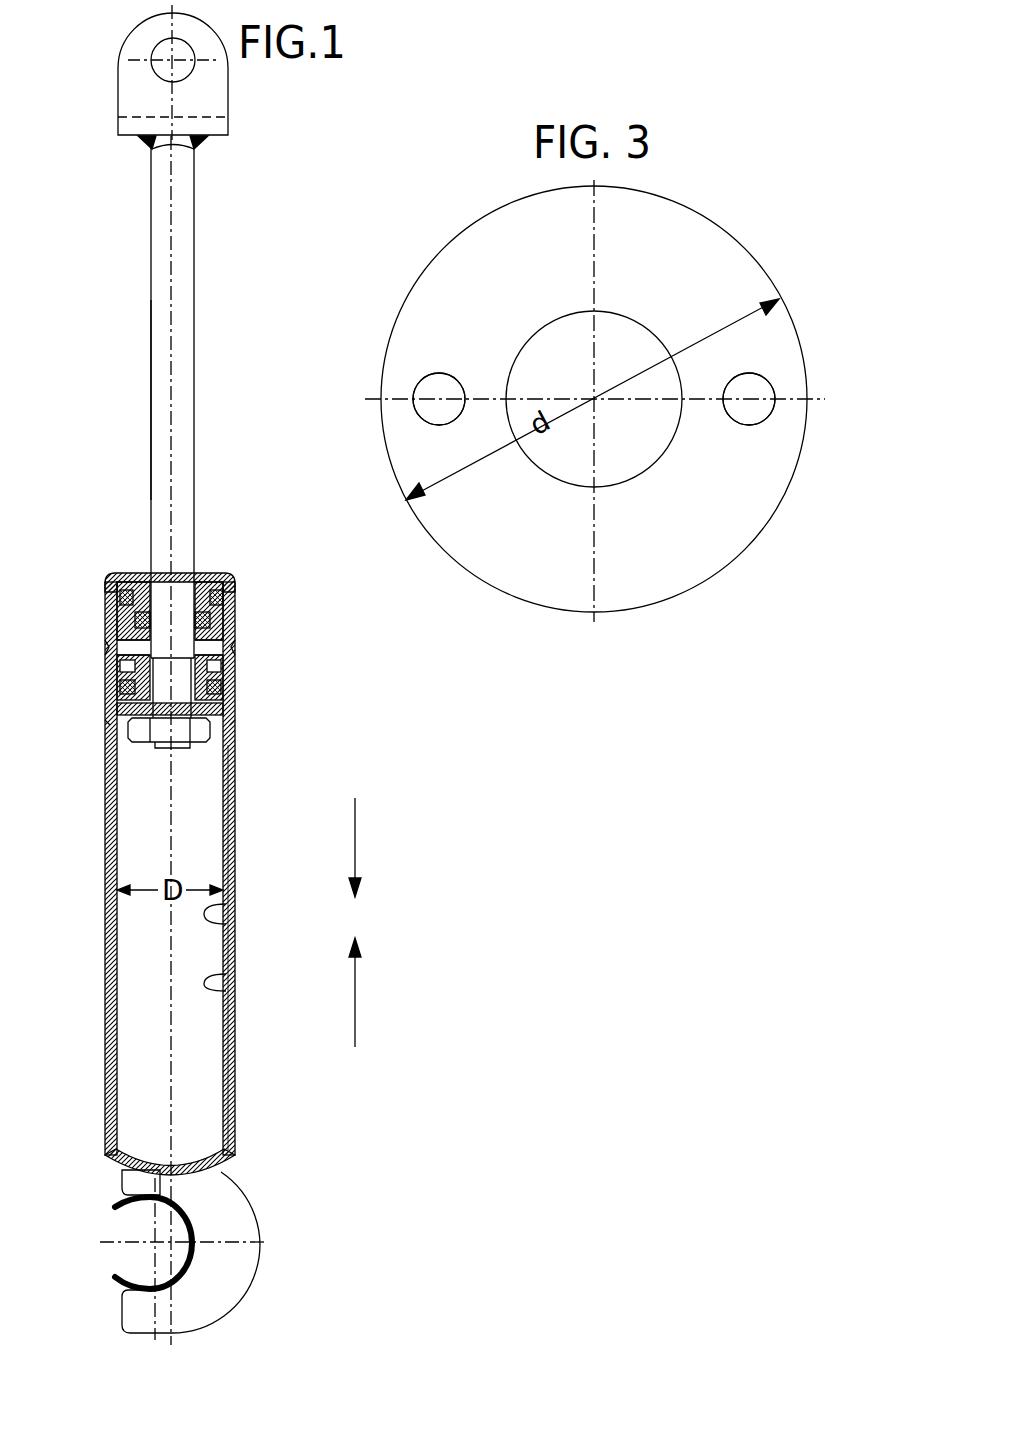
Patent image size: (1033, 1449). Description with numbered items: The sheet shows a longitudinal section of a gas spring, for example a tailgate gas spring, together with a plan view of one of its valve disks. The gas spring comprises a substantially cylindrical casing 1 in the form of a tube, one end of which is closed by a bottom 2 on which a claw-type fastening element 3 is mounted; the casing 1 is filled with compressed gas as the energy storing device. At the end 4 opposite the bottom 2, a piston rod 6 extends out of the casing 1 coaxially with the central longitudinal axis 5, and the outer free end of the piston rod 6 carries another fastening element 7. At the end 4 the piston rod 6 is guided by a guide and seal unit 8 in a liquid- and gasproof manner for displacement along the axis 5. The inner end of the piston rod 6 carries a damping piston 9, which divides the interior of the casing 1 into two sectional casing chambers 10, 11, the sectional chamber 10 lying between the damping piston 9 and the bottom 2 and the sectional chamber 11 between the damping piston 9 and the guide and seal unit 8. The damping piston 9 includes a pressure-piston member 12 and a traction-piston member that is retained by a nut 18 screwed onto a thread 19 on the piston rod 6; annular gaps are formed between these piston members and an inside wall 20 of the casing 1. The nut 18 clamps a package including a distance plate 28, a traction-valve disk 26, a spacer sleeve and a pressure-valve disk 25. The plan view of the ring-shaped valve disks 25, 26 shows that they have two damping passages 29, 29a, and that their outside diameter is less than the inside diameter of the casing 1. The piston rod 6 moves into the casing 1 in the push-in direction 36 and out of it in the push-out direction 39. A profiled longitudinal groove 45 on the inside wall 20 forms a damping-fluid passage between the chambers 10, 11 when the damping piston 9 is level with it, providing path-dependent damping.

In FIG. 1, the casing 1 is at (106, 943).
In FIG. 1, the bottom 2 is at (118, 1165).
In FIG. 1, the claw-type fastening element 3 is at (138, 1310).
In FIG. 1, the end 4 is at (115, 576).
In FIG. 1, the central longitudinal axis 5 is at (172, 297).
In FIG. 1, the piston rod 6 is at (150, 380).
In FIG. 1, the fastening element 7 is at (130, 92).
In FIG. 1, the guide and seal unit 8 is at (232, 576).
In FIG. 1, the damping piston 9 is at (106, 740).
In FIG. 1, the sectional casing chamber 10 is at (145, 1037).
In FIG. 1, the sectional casing chamber 11 is at (122, 667).
In FIG. 1, the pressure-piston member 12 is at (214, 672).
In FIG. 1, the nut 18 is at (142, 730).
In FIG. 1, the thread 19 is at (183, 742).
In FIG. 1, the inside wall 20 is at (204, 990).
In FIG. 3, the pressure-valve disk 25 is at (753, 252).
In FIG. 3, the traction-valve disk 26 is at (594, 399).
In FIG. 1, the distance plate 28 is at (226, 703).
In FIG. 3, the damping passage 29 is at (432, 392).
In FIG. 3, the damping passage 29a is at (594, 399).
In FIG. 1, the push-in direction 36 is at (355, 843).
In FIG. 1, the push-out direction 39 is at (355, 998).
In FIG. 1, the longitudinal groove 45 is at (226, 912).